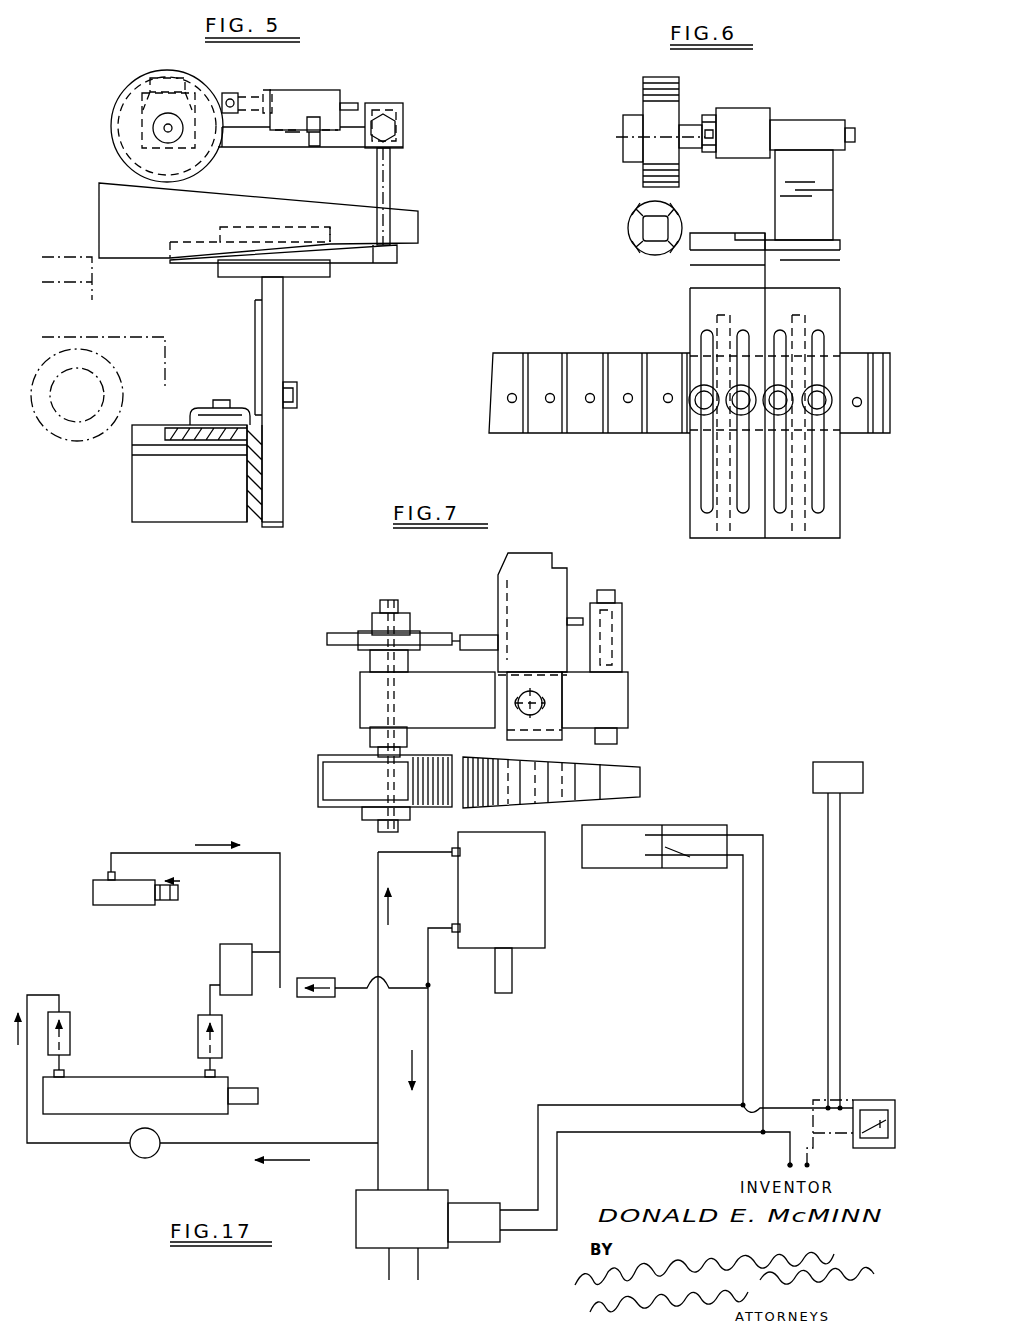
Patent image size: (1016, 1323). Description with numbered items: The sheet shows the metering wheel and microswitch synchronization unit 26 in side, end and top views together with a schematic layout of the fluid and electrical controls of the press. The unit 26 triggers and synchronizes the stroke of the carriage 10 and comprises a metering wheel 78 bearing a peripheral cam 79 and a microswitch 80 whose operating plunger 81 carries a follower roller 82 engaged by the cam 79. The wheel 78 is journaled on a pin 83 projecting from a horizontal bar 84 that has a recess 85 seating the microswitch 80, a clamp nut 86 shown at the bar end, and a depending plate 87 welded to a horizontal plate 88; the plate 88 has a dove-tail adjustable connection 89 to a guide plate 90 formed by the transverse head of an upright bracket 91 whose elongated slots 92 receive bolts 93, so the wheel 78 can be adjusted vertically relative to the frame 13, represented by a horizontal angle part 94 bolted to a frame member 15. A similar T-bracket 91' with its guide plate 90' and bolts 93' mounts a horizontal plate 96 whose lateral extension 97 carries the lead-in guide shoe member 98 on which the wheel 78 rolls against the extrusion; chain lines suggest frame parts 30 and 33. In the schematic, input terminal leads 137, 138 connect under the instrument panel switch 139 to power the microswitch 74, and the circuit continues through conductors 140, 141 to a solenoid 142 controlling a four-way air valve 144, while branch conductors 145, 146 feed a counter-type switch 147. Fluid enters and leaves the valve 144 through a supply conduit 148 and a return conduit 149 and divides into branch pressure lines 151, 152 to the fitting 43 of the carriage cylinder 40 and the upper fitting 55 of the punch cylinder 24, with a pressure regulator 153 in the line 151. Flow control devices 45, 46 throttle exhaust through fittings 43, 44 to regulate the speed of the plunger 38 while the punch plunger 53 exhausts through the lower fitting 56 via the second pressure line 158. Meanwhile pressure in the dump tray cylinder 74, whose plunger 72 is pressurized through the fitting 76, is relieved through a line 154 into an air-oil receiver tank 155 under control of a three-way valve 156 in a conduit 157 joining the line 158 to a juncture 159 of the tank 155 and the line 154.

In FIG. 5, the metering wheel 78 is at (137, 74).
In FIG. 6, the metering wheel 78 is at (641, 100).
In FIG. 7, the metering wheel 78 is at (425, 630).
In FIG. 5, the peripheral cam 79 is at (190, 82).
In FIG. 6, the peripheral cam 79 is at (710, 134).
In FIG. 7, the peripheral cam 79 is at (367, 651).
In FIG. 5, the microswitch 80 is at (313, 103).
In FIG. 6, the microswitch 80 is at (752, 128).
In FIG. 7, the microswitch 80 is at (546, 604).
In FIG. 5, the operating plunger 81 is at (270, 90).
In FIG. 5, the follower roller 82 is at (236, 92).
In FIG. 6, the follower roller 82 is at (712, 153).
In FIG. 7, the follower roller 82 is at (463, 637).
In FIG. 5, the pin 83 is at (173, 131).
In FIG. 6, the pin 83 is at (716, 136).
In FIG. 7, the pin 83 is at (382, 752).
In FIG. 5, the horizontal bar 84 is at (288, 142).
In FIG. 6, the horizontal bar 84 is at (826, 131).
In FIG. 7, the horizontal bar 84 is at (494, 700).
In FIG. 5, the recess 85 is at (387, 116).
In FIG. 5, the clamp nut 86 is at (408, 128).
In FIG. 5, the depending plate 87 is at (390, 193).
In FIG. 6, the depending plate 87 is at (823, 217).
In FIG. 7, the depending plate 87 is at (624, 633).
In FIG. 5, the horizontal plate 88 is at (374, 262).
In FIG. 6, the horizontal plate 88 is at (833, 248).
In FIG. 6, the dove-tail adjustable connection 89 is at (830, 259).
In FIG. 17, the dove-tail adjustable connection 89 is at (826, 861).
In FIG. 6, the guide plate 90 is at (791, 385).
In FIG. 17, the guide plate 90 is at (869, 952).
In FIG. 5, the guide plate 90' is at (292, 295).
In FIG. 5, the upright bracket 91 is at (382, 86).
In FIG. 6, the upright bracket 91 is at (760, 425).
In FIG. 17, the upright bracket 91 is at (868, 967).
In FIG. 5, the T-bracket 91' is at (302, 402).
In FIG. 6, the T-bracket 91' is at (675, 329).
In FIG. 5, the elongated slots 92 is at (281, 500).
In FIG. 6, the elongated slots 92 is at (815, 500).
In FIG. 6, the bolts 93 is at (793, 374).
In FIG. 5, the bolts 93' is at (329, 395).
In FIG. 6, the bolts 93' is at (665, 442).
In FIG. 5, the horizontal angle part 94 is at (250, 409).
In FIG. 6, the horizontal angle part 94 is at (625, 370).
In FIG. 6, the horizontal plate 96 is at (736, 244).
In FIG. 6, the lateral extension 97 is at (687, 237).
In FIG. 5, the guide shoe member 98 is at (136, 216).
In FIG. 6, the guide shoe member 98 is at (629, 242).
In FIG. 7, the guide shoe member 98 is at (612, 780).
In FIG. 5, the synchronization unit 26 is at (405, 171).
In FIG. 6, the synchronization unit 26 is at (629, 198).
In FIG. 7, the synchronization unit 26 is at (631, 656).
In FIG. 17, the synchronization unit 26 is at (811, 763).
In FIG. 5, the carriage 10 is at (170, 360).
In FIG. 5, the frame member 30 is at (148, 345).
In FIG. 5, the drum 33 is at (78, 442).
In FIG. 5, the frame 13 is at (212, 528).
In FIG. 5, the frame member 15 is at (254, 492).
In FIG. 17, the punch operating cylinder 24 is at (528, 937).
In FIG. 17, the cylinder plunger 38 is at (246, 1104).
In FIG. 17, the carriage cylinder 40 is at (143, 1094).
In FIG. 17, the line or fitting 43 is at (66, 1075).
In FIG. 17, the line or fitting 44 is at (217, 1075).
In FIG. 17, the flow control valve device 45 is at (71, 1028).
In FIG. 17, the flow control valve device 46 is at (224, 1042).
In FIG. 17, the punch plunger 53 is at (508, 973).
In FIG. 17, the upper fitting 55 is at (458, 849).
In FIG. 17, the lower fitting 56 is at (457, 927).
In FIG. 17, the plunger 72 is at (172, 900).
In FIG. 17, the dump tray cylinder 74 is at (138, 888).
In FIG. 17, the line or fitting 76 is at (107, 874).
In FIG. 17, the input terminal lead 137 is at (789, 1153).
In FIG. 17, the input terminal lead 138 is at (808, 1163).
In FIG. 17, the instrument panel switch 139 is at (864, 1128).
In FIG. 17, the conductor 140 is at (693, 1095).
In FIG. 17, the conductor 141 is at (686, 1133).
In FIG. 17, the electrical solenoid 142 is at (482, 1206).
In FIG. 17, the four-way air valve 144 is at (424, 1207).
In FIG. 17, the branch conductor 145 is at (746, 962).
In FIG. 17, the branch conductor 146 is at (764, 1083).
In FIG. 17, the electrical counter-type switch 147 is at (693, 803).
In FIG. 17, the supply conduit 148 is at (387, 1263).
In FIG. 17, the return conduit 149 is at (418, 1263).
In FIG. 17, the branch pressure line 151 is at (204, 1145).
In FIG. 17, the branch pressure line 152 is at (376, 1050).
In FIG. 17, the pressure regulator 153 is at (147, 1152).
In FIG. 17, the dump tray cylinder line 154 is at (263, 855).
In FIG. 17, the air-oil receiver tank 155 is at (236, 945).
In FIG. 17, the three-way valve 156 is at (333, 963).
In FIG. 17, the conduit 157 is at (403, 984).
In FIG. 17, the second fluid pressure line 158 is at (428, 1037).
In FIG. 17, the juncture 159 is at (280, 952).